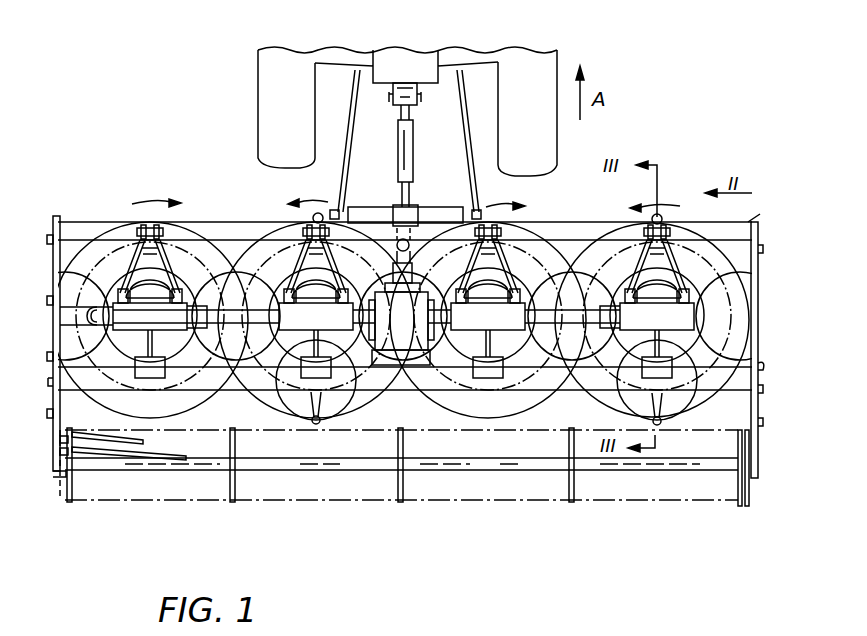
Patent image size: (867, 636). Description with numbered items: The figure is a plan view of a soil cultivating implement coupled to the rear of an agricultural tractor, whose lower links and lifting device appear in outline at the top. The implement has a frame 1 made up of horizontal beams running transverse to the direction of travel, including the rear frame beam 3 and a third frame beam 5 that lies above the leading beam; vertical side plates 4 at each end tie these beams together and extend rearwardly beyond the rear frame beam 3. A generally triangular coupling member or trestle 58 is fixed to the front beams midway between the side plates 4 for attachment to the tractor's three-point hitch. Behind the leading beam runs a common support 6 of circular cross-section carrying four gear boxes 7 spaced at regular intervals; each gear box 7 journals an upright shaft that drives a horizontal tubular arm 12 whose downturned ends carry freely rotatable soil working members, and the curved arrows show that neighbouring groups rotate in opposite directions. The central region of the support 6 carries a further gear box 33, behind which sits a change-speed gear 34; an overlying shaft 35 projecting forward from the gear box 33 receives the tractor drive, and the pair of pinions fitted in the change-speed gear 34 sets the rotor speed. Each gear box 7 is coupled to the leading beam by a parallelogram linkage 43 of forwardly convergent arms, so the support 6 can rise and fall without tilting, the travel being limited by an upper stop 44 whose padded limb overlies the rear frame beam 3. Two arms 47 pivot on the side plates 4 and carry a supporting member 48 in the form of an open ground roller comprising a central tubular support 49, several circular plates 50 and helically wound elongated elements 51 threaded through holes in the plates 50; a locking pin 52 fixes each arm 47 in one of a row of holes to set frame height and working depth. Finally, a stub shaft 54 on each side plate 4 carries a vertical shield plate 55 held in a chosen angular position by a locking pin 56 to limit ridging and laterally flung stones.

The frame 1 is at (405, 299).
The rear frame beam 3 is at (97, 380).
The side plate 4 is at (57, 214).
The third frame beam 5 is at (90, 221).
The common support 6 is at (254, 300).
The gear box 7 is at (178, 332).
The tubular arm 12 is at (108, 304).
The further gear box 33 is at (412, 286).
The change-speed gear 34 is at (385, 366).
The overlying shaft 35 is at (393, 286).
The parallelogram linkage 43 is at (167, 262).
The upper stop 44 is at (150, 378).
The arm 47 is at (62, 482).
The supporting member 48 is at (402, 481).
The central tubular support 49 is at (336, 465).
The circular plate 50 is at (74, 503).
The elongated element 51 is at (168, 452).
The locking pin 52 is at (50, 414).
The stub shaft 54 is at (50, 240).
The shield plate 55 is at (50, 300).
The locking pin 56 is at (50, 356).
The coupling member or trestle 58 is at (431, 208).